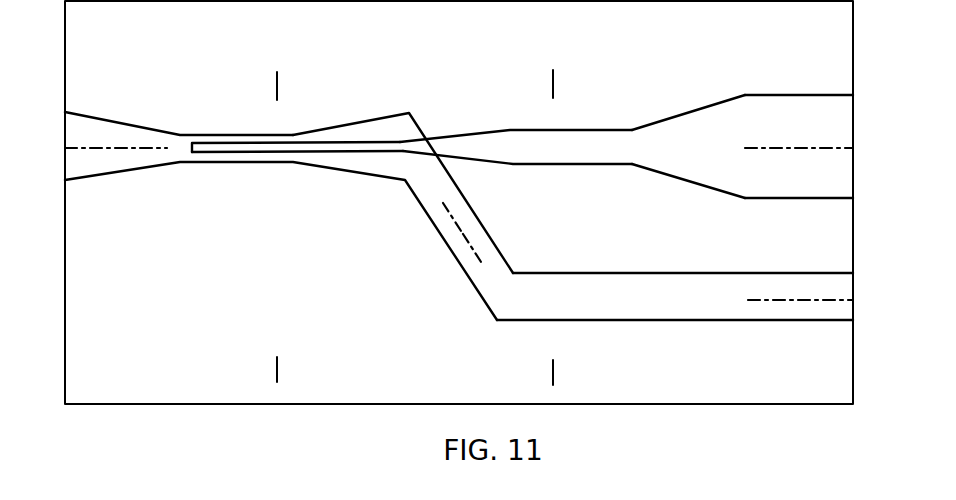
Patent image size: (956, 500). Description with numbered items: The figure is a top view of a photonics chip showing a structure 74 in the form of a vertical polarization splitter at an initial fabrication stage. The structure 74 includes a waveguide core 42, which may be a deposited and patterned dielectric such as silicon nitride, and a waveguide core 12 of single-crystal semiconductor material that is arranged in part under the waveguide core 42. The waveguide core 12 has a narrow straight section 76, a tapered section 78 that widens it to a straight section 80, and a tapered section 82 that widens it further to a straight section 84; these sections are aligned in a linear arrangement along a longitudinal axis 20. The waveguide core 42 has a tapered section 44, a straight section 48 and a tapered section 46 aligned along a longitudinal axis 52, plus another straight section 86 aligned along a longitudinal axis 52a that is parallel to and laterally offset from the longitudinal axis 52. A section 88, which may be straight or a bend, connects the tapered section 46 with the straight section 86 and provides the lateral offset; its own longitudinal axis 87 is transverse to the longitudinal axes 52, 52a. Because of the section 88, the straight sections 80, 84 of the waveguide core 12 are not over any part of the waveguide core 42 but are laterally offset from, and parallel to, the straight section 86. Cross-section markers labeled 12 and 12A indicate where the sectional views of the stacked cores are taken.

The waveguide core 12 is at (262, 82).
The waveguide cross-section line 12A is at (537, 82).
The longitudinal axis 20 is at (818, 147).
The waveguide core 42 is at (366, 176).
The tapered section 44 is at (128, 137).
The tapered section 46 is at (367, 130).
The straight section 48 is at (233, 155).
The longitudinal axis 52 is at (97, 148).
The longitudinal axis 52a is at (792, 303).
The structure 74 is at (210, 265).
The straight section 76 is at (227, 148).
The tapered section 78 is at (465, 143).
The straight section 80 is at (553, 148).
The tapered section 82 is at (700, 128).
The straight section 84 is at (798, 125).
The straight section 86 is at (690, 310).
The longitudinal axis 87 is at (477, 253).
The section 88 is at (443, 213).